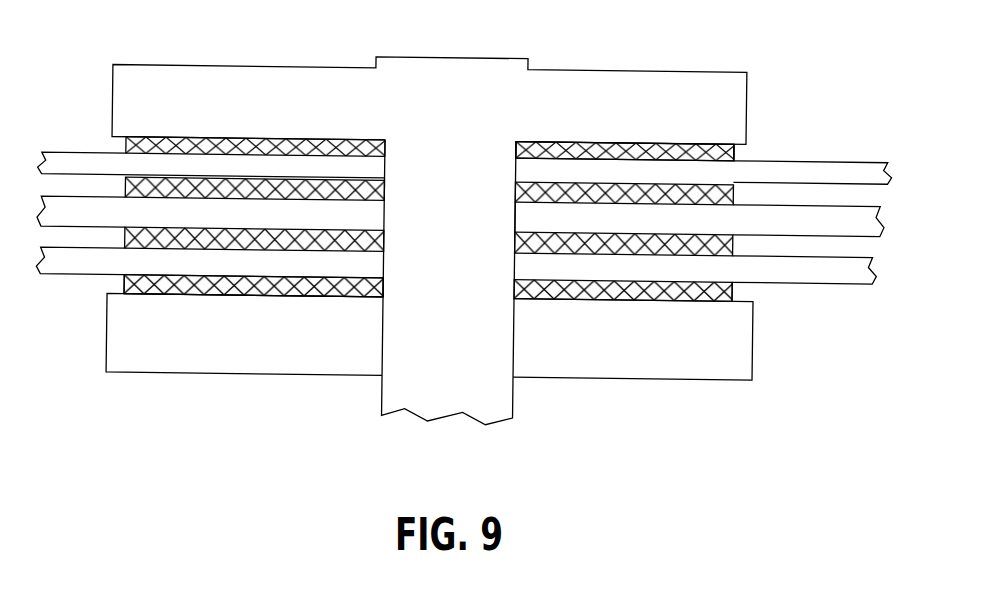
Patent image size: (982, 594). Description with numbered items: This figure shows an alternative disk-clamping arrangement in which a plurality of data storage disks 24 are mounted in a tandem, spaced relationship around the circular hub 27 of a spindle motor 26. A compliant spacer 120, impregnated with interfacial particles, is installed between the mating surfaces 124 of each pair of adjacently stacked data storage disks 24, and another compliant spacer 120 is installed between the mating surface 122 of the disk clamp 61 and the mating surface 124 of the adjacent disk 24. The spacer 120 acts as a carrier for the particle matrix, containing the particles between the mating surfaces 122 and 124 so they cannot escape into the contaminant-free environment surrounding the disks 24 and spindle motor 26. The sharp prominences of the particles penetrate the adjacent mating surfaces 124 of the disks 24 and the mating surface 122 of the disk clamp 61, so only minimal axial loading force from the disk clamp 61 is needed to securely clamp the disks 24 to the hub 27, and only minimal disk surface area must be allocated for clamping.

The disk clamp 61 is at (663, 78).
The spindle motor 26 is at (464, 254).
The mating surface of the disk clamp 122 is at (212, 138).
The mating surface of the data storage disk 124 is at (161, 289).
The data storage disk 24 is at (78, 152).
The hub 27 is at (517, 222).
The compliant spacer 120 is at (735, 154).